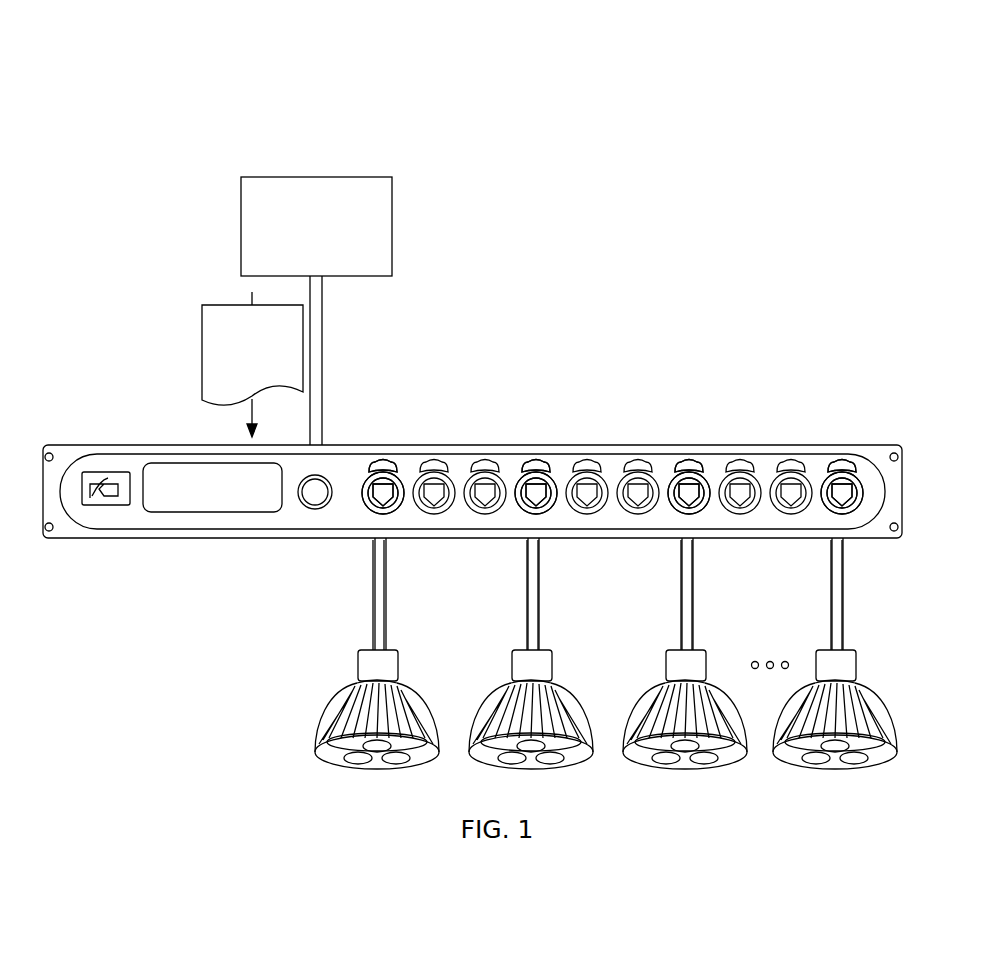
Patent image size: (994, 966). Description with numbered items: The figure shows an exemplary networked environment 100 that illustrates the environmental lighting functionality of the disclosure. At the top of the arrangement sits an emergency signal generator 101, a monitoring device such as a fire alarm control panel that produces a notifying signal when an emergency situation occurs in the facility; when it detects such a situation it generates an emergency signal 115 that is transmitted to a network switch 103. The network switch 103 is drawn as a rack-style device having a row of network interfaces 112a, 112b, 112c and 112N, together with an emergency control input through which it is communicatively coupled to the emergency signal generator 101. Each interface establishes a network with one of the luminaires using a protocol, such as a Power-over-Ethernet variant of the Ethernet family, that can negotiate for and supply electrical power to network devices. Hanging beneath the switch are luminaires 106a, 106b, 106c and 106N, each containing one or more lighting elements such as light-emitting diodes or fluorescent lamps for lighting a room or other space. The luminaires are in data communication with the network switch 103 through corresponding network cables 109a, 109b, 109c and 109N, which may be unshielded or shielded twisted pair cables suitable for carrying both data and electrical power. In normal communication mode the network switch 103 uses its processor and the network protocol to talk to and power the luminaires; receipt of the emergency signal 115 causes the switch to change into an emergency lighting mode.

The networked environment 100 is at (713, 47).
The emergency signal generator 101 is at (316, 311).
The emergency signal 115 is at (252, 364).
The network switch 103 is at (727, 445).
The network interface 112a is at (400, 515).
The network interface 112b is at (553, 515).
The network interface 112c is at (706, 515).
The network interface 112N is at (857, 515).
The network cable 109a is at (373, 622).
The network cable 109b is at (527, 617).
The network cable 109c is at (681, 617).
The network cable 109N is at (831, 617).
The luminaire 106a is at (397, 668).
The luminaire 106b is at (552, 668).
The luminaire 106c is at (707, 668).
The luminaire 106N is at (855, 668).